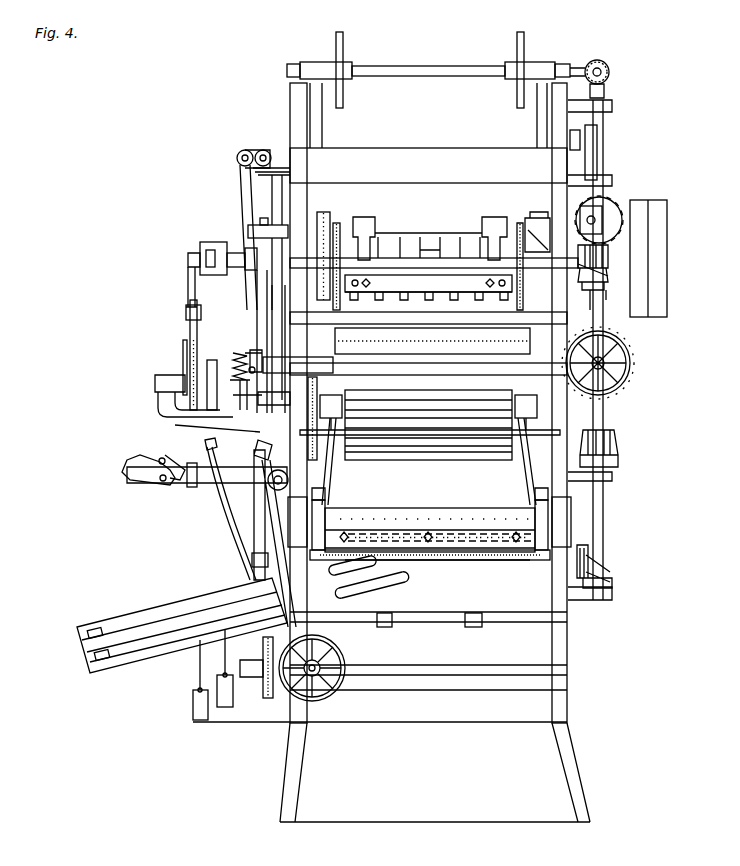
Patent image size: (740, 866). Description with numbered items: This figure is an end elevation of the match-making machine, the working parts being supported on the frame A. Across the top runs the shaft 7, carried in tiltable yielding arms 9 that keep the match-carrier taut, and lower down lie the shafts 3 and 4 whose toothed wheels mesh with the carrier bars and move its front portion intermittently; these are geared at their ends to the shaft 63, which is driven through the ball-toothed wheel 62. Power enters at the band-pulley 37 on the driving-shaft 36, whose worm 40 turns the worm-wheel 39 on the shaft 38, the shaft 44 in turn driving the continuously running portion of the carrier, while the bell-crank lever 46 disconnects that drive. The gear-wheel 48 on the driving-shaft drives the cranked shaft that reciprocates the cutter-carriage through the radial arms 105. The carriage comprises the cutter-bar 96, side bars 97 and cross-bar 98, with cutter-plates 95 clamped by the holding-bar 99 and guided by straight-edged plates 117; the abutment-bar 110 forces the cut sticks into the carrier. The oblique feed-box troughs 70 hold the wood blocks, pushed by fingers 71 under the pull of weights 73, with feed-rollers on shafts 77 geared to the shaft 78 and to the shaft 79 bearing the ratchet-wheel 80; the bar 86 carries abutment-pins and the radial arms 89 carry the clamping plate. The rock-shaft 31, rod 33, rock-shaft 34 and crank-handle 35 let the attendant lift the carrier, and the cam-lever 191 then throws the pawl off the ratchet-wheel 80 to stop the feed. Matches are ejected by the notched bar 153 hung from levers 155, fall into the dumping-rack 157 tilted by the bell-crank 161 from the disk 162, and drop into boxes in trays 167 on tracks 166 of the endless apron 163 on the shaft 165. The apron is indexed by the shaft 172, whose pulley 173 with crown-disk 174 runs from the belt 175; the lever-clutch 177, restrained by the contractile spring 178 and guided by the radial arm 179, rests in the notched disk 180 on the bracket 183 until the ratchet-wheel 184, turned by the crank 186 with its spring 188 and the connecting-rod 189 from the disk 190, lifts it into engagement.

The shaft 3 is at (445, 257).
The shaft 4 is at (590, 558).
The shaft 7 is at (421, 66).
The tiltable yielding arm 9 is at (314, 62).
The rock-shaft 31 is at (250, 150).
The rod 33 is at (244, 186).
The rock-shaft 34 is at (287, 480).
The crank-handle 35 is at (204, 471).
The driving-shaft 36 is at (612, 268).
The band-pulley 37 is at (665, 226).
The shaft 38 is at (605, 215).
The worm-wheel 39 is at (612, 205).
The worm 40 is at (618, 278).
The shaft 44 is at (609, 70).
The bell-crank lever 46 is at (522, 216).
The gear-wheel 48 is at (324, 211).
The ball-toothed wheel 62 is at (636, 360).
The shaft 63 is at (600, 416).
The trough 70 is at (104, 673).
The finger 71 is at (88, 633).
The weight 73 is at (193, 705).
The shaft 77 is at (268, 505).
The shaft 78 is at (291, 690).
The shaft 79 is at (416, 674).
The ratchet-wheel 80 is at (264, 650).
The bar 86 is at (447, 562).
The radial arm 89 is at (382, 622).
The cutter-plate 95 is at (421, 509).
The cutter-bar 96 is at (528, 561).
The side bar 97 is at (292, 527).
The cross-bar 98 is at (435, 520).
The holding-bar 99 is at (372, 530).
The radial arm 105 is at (331, 488).
The abutment-bar 110 is at (476, 562).
The straight-edged plate 117 is at (430, 501).
The bar 153 is at (428, 287).
The lever 155 is at (368, 216).
The dumping-rack 157 is at (450, 328).
The bell-crank 161 is at (274, 305).
The disk 162 is at (264, 218).
The endless apron 163 is at (428, 425).
The shaft 165 is at (528, 470).
The recessed track 166 is at (480, 437).
The tray 167 is at (476, 394).
The shaft 172 is at (320, 385).
The pulley 173 is at (282, 406).
The crown-disk 174 is at (298, 366).
The belt 175 is at (285, 340).
The lever-clutch 177 is at (252, 350).
The contractile spring 178 is at (236, 353).
The radial arm 179 is at (248, 412).
The disk 180 is at (218, 413).
The bracket 183 is at (172, 425).
The ratchet-wheel 184 is at (190, 398).
The crank 186 is at (181, 375).
The spring 188 is at (200, 342).
The connecting-rod 189 is at (188, 291).
The disk 190 is at (202, 240).
The cam-lever 191 is at (252, 558).
The frame A is at (572, 728).